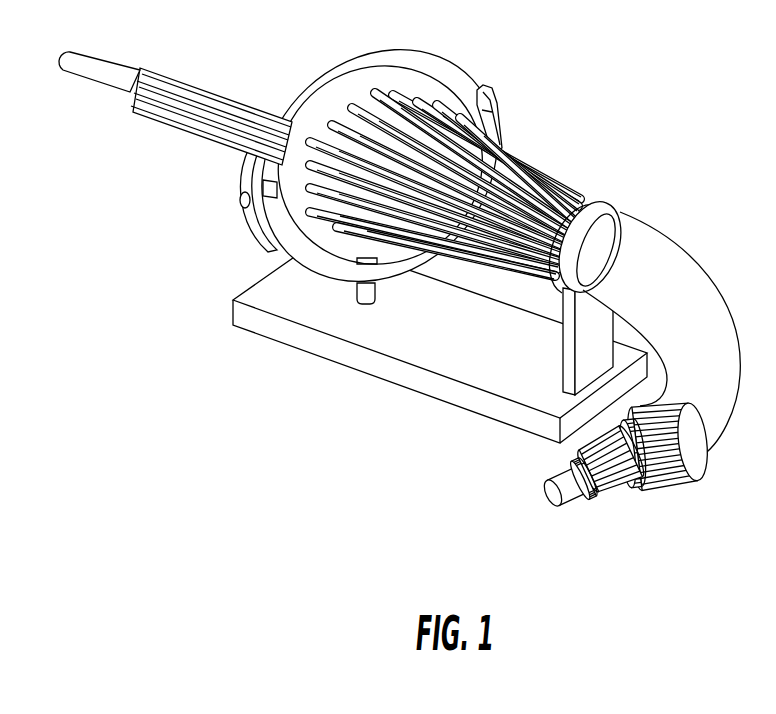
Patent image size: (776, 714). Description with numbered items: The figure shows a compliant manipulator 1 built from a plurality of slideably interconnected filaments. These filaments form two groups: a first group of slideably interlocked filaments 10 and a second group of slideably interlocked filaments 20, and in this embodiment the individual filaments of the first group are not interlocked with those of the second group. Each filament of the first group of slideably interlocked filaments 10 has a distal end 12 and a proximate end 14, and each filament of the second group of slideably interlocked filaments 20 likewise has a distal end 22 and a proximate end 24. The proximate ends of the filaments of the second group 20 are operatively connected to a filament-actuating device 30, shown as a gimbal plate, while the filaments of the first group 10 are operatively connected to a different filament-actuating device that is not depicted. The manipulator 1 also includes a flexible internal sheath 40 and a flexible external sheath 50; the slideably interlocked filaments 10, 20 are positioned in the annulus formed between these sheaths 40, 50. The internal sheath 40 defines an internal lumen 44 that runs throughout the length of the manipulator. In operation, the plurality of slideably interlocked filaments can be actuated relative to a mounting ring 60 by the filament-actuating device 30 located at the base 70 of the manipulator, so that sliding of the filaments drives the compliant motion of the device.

The manipulator 1 is at (221, 400).
The first group of slideably interlocked filaments 10 is at (608, 462).
The distal end 12 is at (598, 500).
The proximate end 14 is at (147, 68).
The second group of slideably interlocked filaments 20 is at (678, 460).
The distal end 22 is at (652, 481).
The proximate end 24 is at (433, 110).
The filament-actuating device 30 is at (437, 72).
The flexible internal sheath 40 is at (88, 76).
The internal lumen 44 is at (551, 496).
The flexible external sheath 50 is at (718, 318).
The mounting ring 60 is at (588, 204).
The base 70 is at (442, 345).